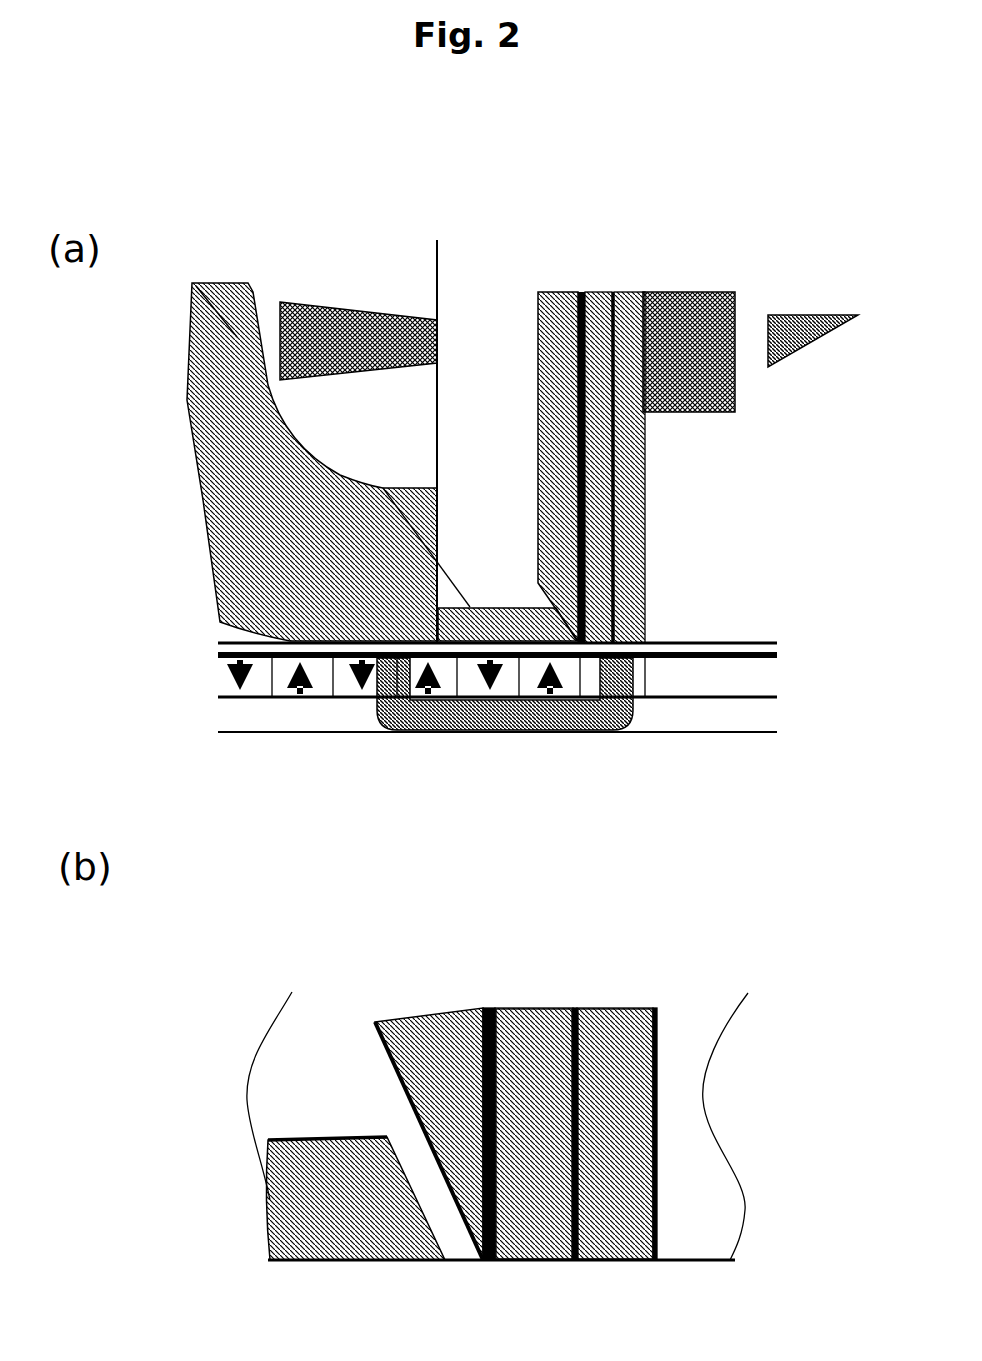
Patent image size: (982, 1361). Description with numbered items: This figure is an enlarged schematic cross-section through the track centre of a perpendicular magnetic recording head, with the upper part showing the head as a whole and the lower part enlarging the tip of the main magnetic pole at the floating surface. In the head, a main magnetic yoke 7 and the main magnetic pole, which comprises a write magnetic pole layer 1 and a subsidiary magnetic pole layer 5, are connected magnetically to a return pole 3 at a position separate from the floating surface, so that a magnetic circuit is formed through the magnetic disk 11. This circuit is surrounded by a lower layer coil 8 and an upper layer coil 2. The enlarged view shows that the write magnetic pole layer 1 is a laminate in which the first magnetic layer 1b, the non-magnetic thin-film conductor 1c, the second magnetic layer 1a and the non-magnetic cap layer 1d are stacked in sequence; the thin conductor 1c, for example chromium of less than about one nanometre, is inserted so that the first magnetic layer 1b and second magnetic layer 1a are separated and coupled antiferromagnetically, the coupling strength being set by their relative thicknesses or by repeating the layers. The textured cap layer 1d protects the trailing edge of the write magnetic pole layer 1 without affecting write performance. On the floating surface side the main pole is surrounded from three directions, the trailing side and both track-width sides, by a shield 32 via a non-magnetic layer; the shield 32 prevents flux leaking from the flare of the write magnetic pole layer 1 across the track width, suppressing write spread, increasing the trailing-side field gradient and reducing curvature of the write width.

The write magnetic pole layer 1 is at (585, 291).
The second magnetic layer 1a is at (557, 1007).
The first magnetic layer 1b is at (630, 1006).
The non-magnetic thin-film conductor 1c is at (577, 1006).
The cap layer 1d is at (490, 1007).
The upper layer coil 2 is at (352, 305).
The return pole 3 is at (248, 281).
The subsidiary magnetic pole layer 5 is at (533, 292).
The main magnetic yoke 7 is at (705, 290).
The lower layer coil 8 is at (820, 314).
The magnetic disk 11 is at (435, 687).
The shield 32 is at (383, 488).